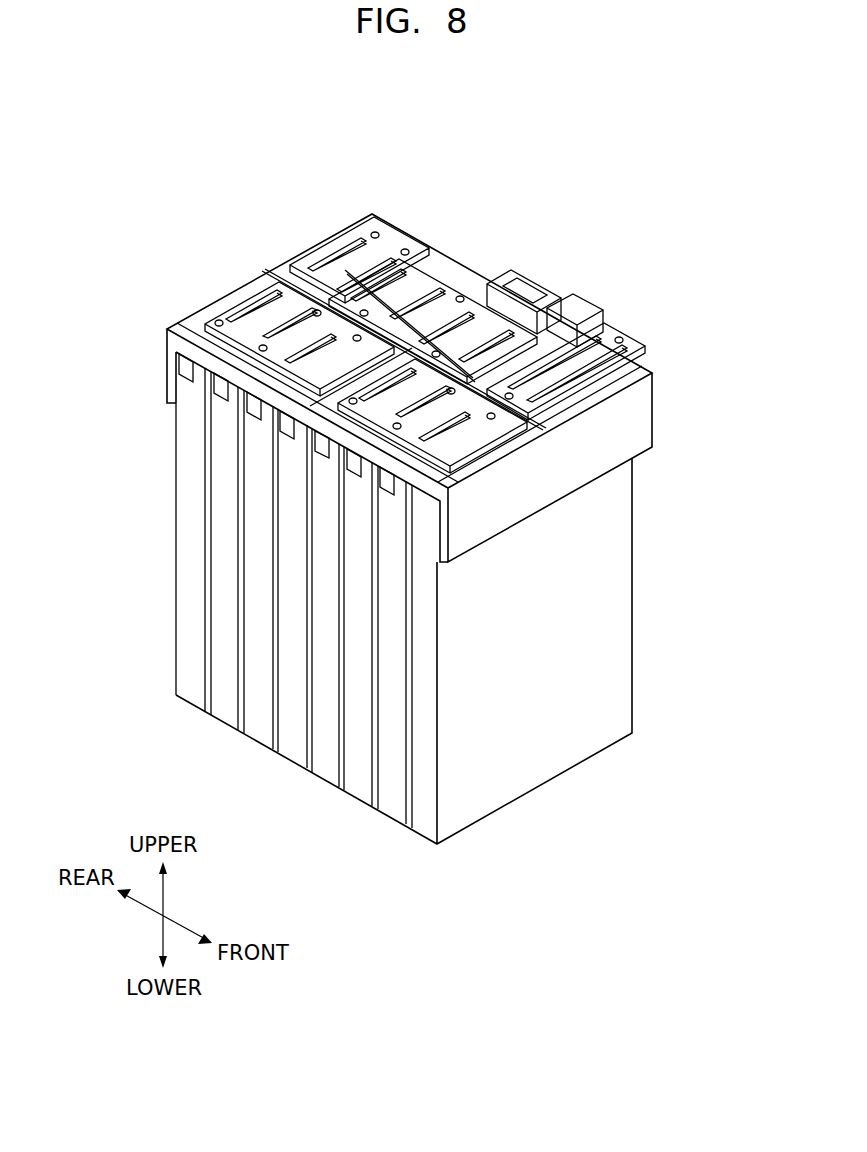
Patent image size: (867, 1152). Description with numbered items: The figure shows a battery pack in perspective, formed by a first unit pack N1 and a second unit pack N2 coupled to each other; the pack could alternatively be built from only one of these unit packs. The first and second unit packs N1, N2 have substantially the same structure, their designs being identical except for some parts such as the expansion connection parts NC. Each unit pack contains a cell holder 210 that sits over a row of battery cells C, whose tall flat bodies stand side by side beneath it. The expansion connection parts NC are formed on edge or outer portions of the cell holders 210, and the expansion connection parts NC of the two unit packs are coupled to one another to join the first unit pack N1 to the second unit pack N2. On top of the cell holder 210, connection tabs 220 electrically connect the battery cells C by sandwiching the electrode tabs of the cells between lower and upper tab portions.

The cell holder 210 is at (643, 412).
The connection tab 220 is at (622, 338).
The battery cell C is at (617, 593).
The first unit pack N1 is at (612, 255).
The second unit pack N2 is at (465, 188).
The expansion connection part NC is at (518, 280).